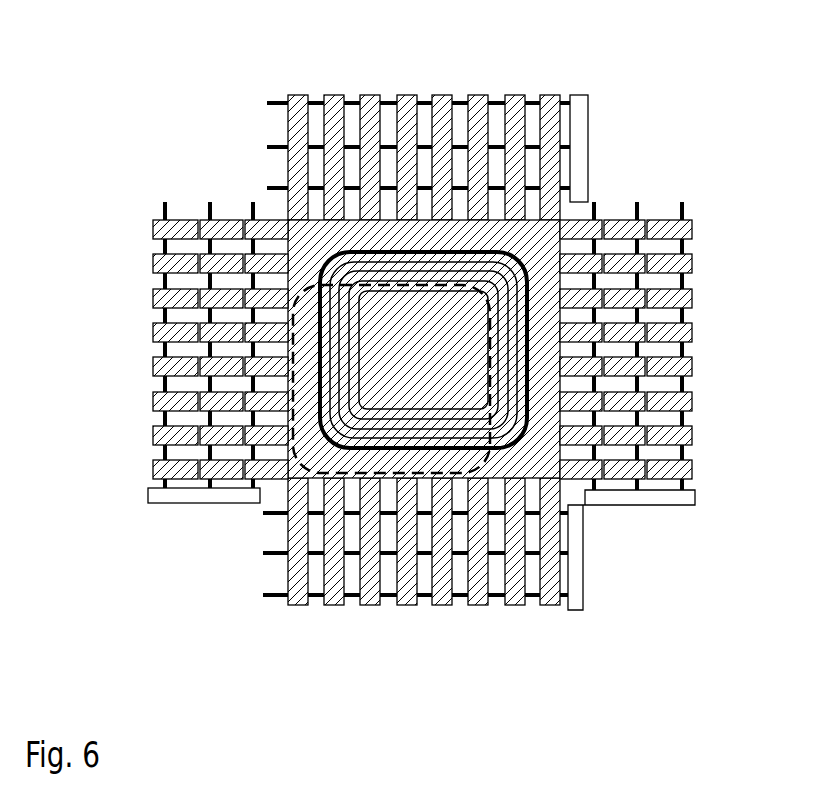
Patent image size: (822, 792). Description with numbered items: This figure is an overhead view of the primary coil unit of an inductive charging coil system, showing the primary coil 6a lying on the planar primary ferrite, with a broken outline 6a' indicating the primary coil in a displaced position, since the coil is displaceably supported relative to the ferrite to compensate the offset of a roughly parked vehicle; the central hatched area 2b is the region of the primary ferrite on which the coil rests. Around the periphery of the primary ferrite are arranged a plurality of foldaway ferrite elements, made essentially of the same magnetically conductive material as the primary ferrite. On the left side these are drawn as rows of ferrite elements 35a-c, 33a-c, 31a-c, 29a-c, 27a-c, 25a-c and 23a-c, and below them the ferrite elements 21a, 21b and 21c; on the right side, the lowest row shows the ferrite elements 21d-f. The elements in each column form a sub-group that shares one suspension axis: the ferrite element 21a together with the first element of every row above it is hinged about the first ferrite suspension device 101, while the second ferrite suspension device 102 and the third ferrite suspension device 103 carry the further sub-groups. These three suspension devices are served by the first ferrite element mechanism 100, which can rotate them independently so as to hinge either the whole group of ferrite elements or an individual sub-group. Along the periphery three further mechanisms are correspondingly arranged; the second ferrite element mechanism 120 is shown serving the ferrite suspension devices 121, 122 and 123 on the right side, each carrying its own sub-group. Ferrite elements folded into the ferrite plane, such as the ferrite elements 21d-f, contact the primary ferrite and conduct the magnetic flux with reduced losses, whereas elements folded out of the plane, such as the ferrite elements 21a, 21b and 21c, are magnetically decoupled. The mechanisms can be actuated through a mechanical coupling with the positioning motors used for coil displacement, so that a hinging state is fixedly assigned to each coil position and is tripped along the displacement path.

The secondary coil carrier / central block 2b is at (560, 316).
The primary coil 6a is at (516, 231).
The primary coil in displaced position 6a' is at (391, 379).
The first ferrite element mechanism 100 is at (148, 495).
The first ferrite suspension device 101 is at (165, 202).
The second ferrite suspension device 102 is at (210, 202).
The third ferrite suspension device 103 is at (253, 202).
The second ferrite element mechanism 120 is at (640, 505).
The ferrite suspension device 121 is at (594, 202).
The ferrite suspension device 122 is at (637, 202).
The ferrite suspension device 123 is at (682, 202).
The ferrite element 21a is at (175, 467).
The ferrite element 21b is at (217, 467).
The ferrite element 21c is at (256, 467).
The ferrite elements 21d-f is at (716, 472).
The ferrite elements 23a-c is at (133, 436).
The ferrite elements 25a-c is at (133, 402).
The ferrite elements 27a-c is at (133, 367).
The ferrite elements 29a-c is at (133, 333).
The ferrite elements 31a-c is at (133, 299).
The ferrite elements 33a-c is at (133, 264).
The ferrite elements 35a-c is at (133, 230).